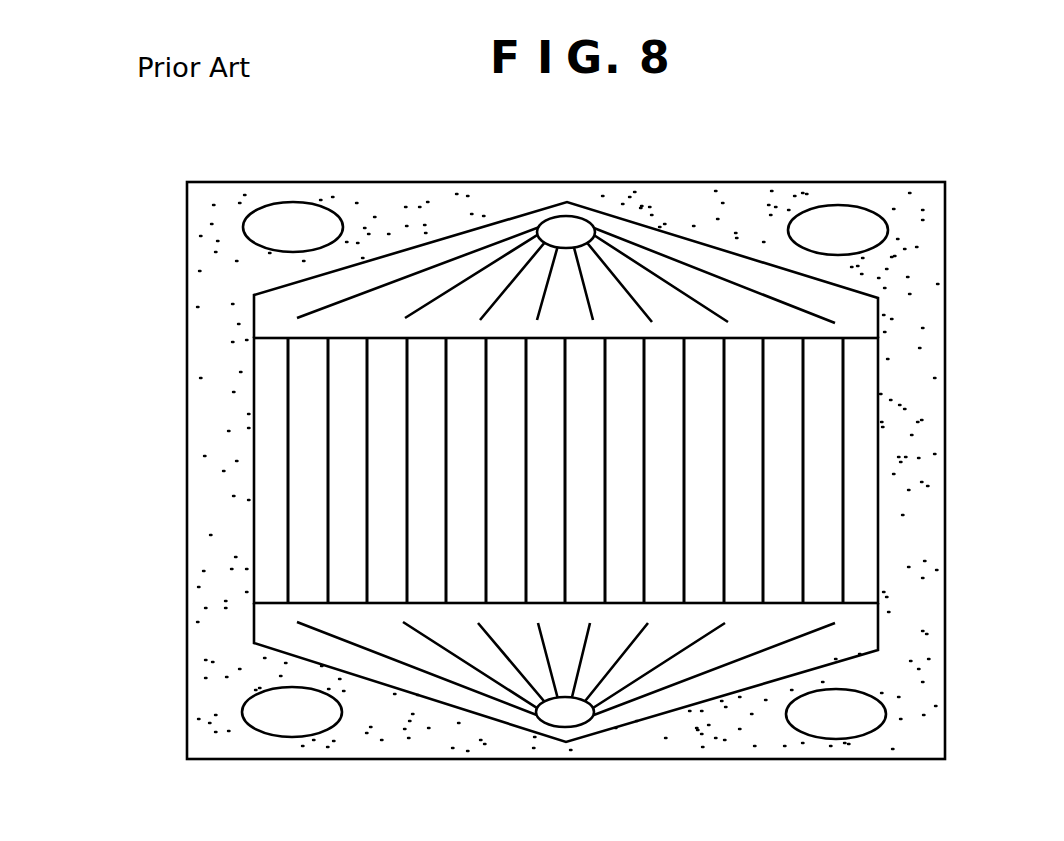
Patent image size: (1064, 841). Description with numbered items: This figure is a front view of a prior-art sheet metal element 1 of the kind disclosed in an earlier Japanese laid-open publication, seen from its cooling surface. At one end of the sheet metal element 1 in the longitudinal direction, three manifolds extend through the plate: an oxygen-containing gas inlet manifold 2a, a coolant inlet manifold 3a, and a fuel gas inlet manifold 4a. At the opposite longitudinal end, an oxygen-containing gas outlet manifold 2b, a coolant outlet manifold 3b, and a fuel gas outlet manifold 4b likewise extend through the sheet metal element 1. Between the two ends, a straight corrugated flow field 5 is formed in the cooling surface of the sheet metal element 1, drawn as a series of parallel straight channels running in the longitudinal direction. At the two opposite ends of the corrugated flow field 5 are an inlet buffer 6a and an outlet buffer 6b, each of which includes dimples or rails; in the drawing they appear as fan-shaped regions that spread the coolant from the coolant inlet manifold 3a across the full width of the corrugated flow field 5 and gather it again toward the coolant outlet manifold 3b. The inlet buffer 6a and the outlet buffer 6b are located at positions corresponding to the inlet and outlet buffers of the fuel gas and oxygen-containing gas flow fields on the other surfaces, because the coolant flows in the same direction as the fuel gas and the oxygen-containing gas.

The sheet metal element 1 is at (787, 110).
The oxygen-containing gas inlet manifold 2a is at (834, 215).
The oxygen-containing gas outlet manifold 2b is at (298, 728).
The coolant inlet manifold 3a is at (555, 234).
The coolant outlet manifold 3b is at (577, 710).
The fuel gas inlet manifold 4a is at (283, 212).
The fuel gas outlet manifold 4b is at (848, 730).
The straight corrugated flow field 5 is at (790, 464).
The inlet buffer 6a is at (825, 317).
The outlet buffer 6b is at (307, 629).